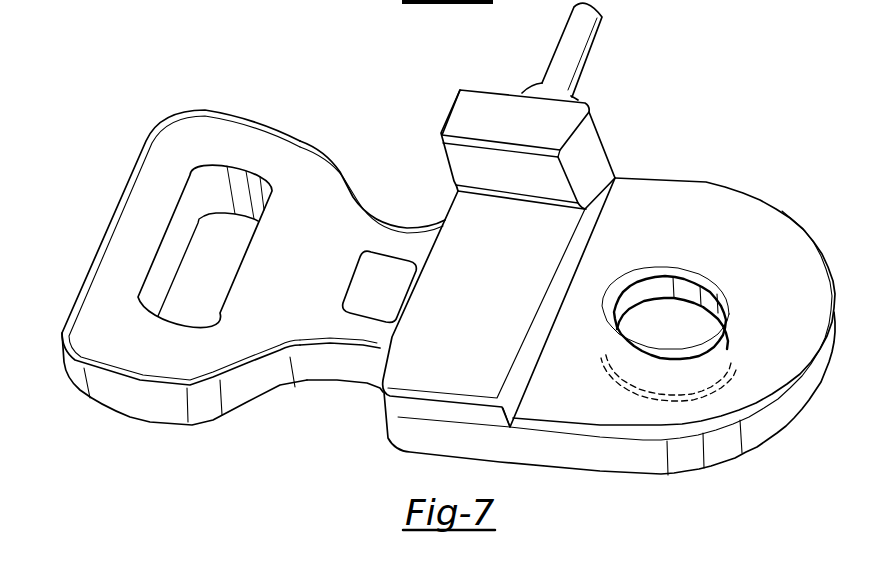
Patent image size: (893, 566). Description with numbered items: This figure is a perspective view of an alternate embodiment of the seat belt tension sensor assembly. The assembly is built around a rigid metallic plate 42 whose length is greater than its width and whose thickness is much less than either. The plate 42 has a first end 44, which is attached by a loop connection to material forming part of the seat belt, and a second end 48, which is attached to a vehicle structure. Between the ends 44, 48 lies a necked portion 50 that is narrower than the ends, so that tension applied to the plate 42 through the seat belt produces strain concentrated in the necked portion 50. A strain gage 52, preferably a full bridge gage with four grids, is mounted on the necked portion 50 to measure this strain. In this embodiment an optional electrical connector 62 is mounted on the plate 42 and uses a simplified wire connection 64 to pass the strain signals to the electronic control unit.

The plate 42 is at (630, 430).
The first end 44 is at (92, 283).
The second end 48 is at (750, 433).
The necked portion 50 is at (347, 372).
The strain gage 52 is at (358, 292).
The electrical connector 62 is at (477, 107).
The wire connection 64 is at (573, 65).